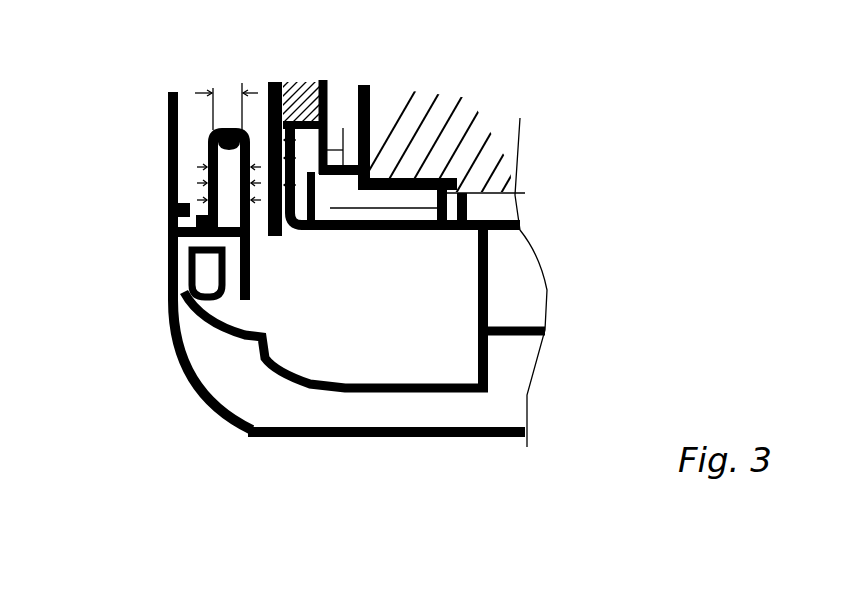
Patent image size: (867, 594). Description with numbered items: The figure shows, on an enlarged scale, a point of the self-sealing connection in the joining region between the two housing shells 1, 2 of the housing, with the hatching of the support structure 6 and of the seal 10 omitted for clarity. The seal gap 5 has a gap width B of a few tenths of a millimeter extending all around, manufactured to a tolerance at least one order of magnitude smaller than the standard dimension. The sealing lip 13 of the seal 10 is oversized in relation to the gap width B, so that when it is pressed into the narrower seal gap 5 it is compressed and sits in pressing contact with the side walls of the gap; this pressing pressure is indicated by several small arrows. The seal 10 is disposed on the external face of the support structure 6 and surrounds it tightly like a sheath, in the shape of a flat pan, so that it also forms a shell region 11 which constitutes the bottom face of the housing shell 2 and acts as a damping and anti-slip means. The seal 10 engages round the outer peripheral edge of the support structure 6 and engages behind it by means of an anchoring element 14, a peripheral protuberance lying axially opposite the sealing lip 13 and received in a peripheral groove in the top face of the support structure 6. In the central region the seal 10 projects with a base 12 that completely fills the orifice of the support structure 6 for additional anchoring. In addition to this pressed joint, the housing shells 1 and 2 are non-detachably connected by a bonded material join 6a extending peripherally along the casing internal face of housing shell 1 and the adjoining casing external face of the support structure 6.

The housing shell 1 is at (168, 94).
The housing shell 2 is at (412, 370).
The seal gap 5 is at (212, 133).
The support structure 6 is at (363, 353).
The material join 6a is at (327, 133).
The seal 10 is at (183, 374).
The shell region 11 is at (217, 382).
The base 12 is at (527, 348).
The sealing lip 13 is at (200, 173).
The anchoring element 14 is at (230, 280).
The gap width B is at (223, 98).